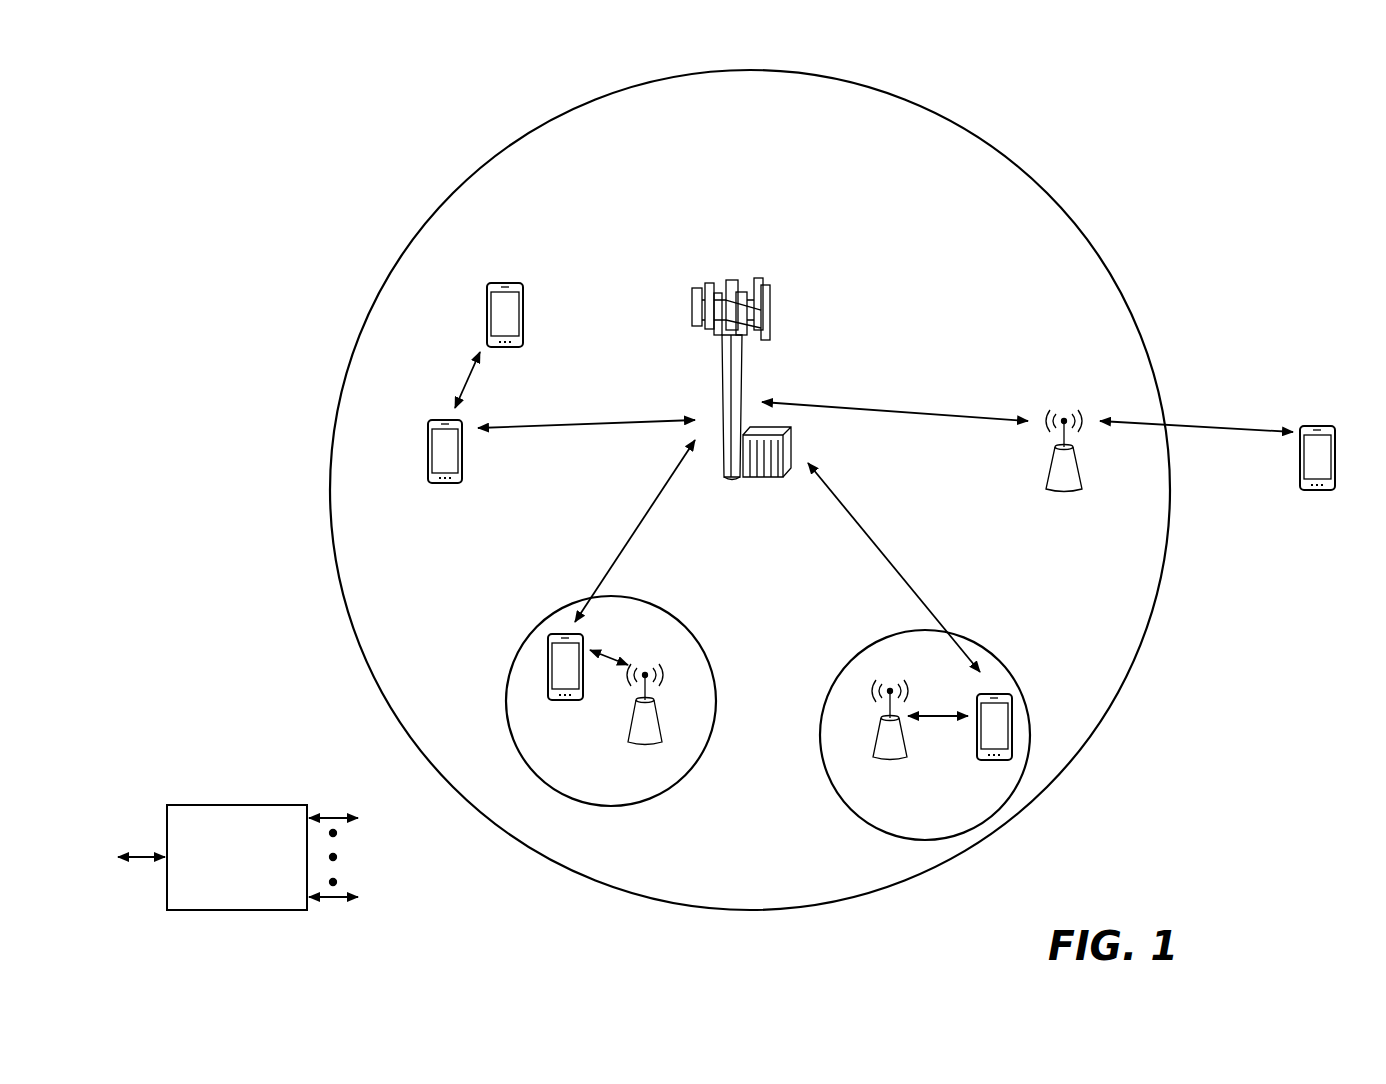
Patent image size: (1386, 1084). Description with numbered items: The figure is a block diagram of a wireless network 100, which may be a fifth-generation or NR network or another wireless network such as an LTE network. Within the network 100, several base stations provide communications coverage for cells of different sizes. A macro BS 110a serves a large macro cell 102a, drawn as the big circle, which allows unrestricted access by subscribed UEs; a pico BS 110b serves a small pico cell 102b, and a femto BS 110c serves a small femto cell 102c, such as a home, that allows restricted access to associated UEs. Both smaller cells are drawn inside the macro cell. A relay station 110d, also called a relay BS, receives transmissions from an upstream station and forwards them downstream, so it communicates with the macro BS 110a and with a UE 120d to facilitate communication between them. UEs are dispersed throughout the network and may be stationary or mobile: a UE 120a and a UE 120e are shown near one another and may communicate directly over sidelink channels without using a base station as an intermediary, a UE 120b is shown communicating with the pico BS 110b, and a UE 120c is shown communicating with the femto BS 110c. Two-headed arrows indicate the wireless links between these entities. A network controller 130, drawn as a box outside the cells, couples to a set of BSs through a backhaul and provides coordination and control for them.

The wireless network 100 is at (218, 66).
The macro cell 102a is at (1028, 174).
The pico cell 102b is at (708, 638).
The femto cell 102c is at (858, 646).
The macro BS 110a is at (738, 270).
The pico BS 110b is at (668, 736).
The femto BS 110c is at (874, 752).
The relay station 110d is at (1066, 410).
The UE 120a is at (428, 440).
The UE 120b is at (552, 702).
The UE 120c is at (977, 762).
The UE 120d is at (1328, 426).
The UE 120e is at (486, 300).
The network controller 130 is at (236, 804).